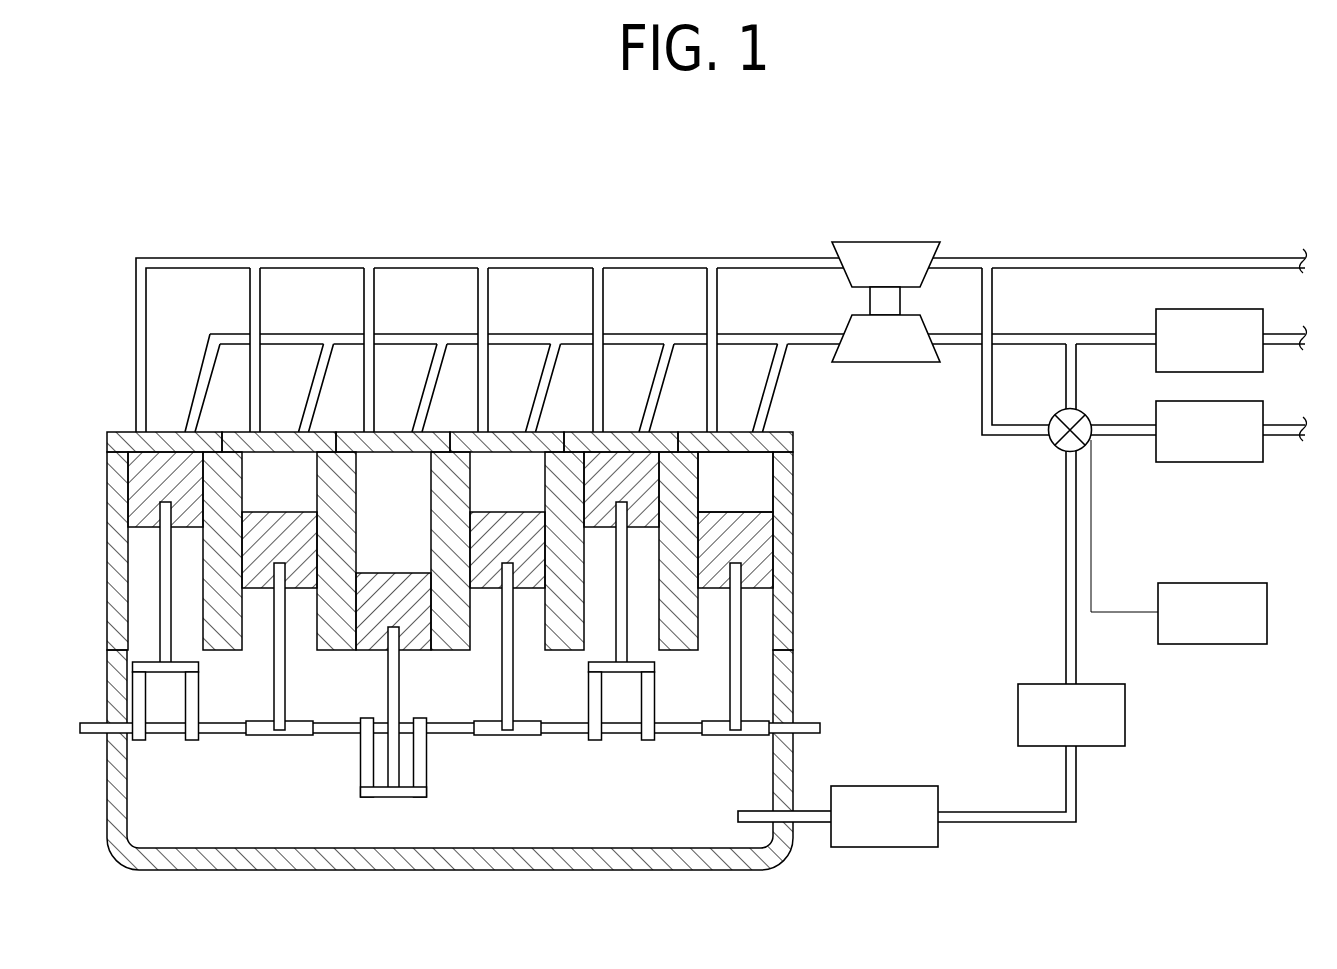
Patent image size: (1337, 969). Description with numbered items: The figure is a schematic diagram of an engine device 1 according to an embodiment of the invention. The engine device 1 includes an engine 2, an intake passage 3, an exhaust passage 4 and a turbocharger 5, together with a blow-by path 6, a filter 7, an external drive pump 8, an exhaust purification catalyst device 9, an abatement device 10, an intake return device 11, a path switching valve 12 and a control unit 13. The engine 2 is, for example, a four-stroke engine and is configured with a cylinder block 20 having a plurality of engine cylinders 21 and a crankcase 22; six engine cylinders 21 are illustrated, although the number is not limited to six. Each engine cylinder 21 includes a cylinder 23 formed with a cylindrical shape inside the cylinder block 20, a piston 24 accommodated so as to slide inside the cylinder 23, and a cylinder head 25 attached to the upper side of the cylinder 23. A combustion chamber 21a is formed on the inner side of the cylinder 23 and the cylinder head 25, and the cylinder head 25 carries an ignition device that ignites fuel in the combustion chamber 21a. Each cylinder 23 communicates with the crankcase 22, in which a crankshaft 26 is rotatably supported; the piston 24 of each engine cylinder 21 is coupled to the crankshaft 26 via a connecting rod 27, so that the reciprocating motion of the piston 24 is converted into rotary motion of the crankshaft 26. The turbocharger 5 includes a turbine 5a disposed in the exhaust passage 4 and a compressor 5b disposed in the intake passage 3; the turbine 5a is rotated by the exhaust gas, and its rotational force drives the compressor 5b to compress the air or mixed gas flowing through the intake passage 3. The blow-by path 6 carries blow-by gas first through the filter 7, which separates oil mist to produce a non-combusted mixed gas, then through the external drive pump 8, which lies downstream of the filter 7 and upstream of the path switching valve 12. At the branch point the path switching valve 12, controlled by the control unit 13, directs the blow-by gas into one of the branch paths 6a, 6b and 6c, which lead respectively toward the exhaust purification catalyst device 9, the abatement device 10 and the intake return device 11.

The engine device 1 is at (128, 238).
The engine 2 is at (108, 423).
The intake passage 3 is at (282, 258).
The exhaust passage 4 is at (285, 333).
The turbocharger 5 is at (842, 234).
The turbine 5a is at (878, 363).
The compressor 5b is at (878, 241).
The blow-by path 6 is at (812, 823).
The branch path 6a is at (1077, 378).
The branch path 6b is at (1122, 436).
The branch path 6c is at (1013, 437).
The filter 7 is at (905, 786).
The external drive pump 8 is at (1100, 684).
The exhaust purification catalyst device 9 is at (1230, 309).
The abatement device 10 is at (1230, 401).
The intake return device 11 is at (997, 534).
The path switching valve 12 is at (1055, 447).
The control unit 13 is at (1230, 583).
The cylinder block 20 is at (840, 410).
The engine cylinder 21 is at (878, 430).
The combustion chamber 21a is at (757, 466).
The crankcase 22 is at (795, 692).
The cylinder 23 is at (795, 473).
The piston 24 is at (757, 511).
The cylinder head 25 is at (795, 441).
The crankshaft 26 is at (808, 718).
The connecting rod 27 is at (793, 612).